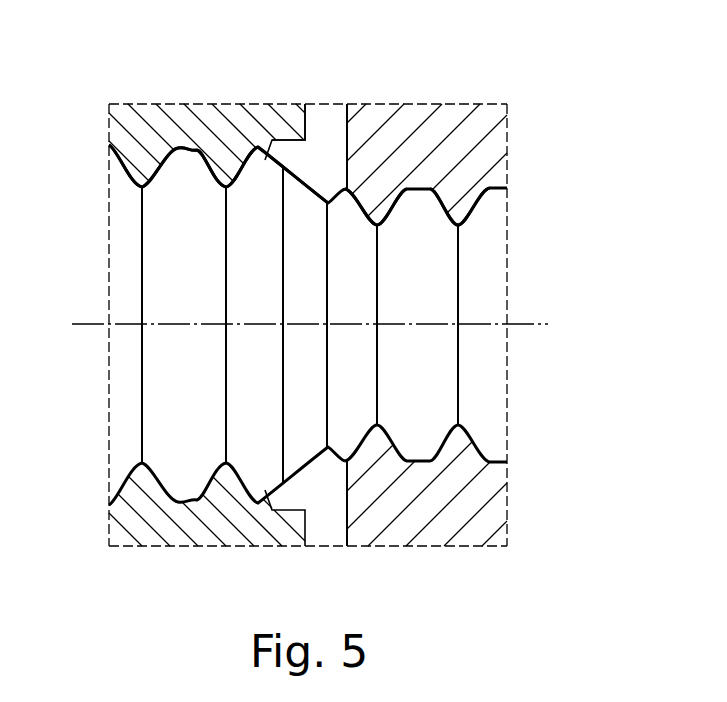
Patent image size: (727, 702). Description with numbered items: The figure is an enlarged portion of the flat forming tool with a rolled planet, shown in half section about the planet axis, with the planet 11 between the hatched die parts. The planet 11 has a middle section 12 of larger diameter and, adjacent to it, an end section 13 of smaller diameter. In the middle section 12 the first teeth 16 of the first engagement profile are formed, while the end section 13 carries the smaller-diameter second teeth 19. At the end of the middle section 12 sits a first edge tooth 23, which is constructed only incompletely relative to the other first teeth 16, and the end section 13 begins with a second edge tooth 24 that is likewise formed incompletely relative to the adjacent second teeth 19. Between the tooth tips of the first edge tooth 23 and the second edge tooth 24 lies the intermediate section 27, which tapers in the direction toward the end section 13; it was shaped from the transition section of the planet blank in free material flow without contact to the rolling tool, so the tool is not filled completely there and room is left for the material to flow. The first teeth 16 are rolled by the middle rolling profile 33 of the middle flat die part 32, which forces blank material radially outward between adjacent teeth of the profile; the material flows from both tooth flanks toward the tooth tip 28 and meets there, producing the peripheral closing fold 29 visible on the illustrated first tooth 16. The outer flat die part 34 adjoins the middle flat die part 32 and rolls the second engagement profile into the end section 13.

The planet 11 is at (225, 319).
The middle section 12 is at (225, 319).
The end section 13 is at (451, 335).
The first tooth 16 is at (197, 158).
The second tooth 19 is at (440, 220).
The first edge tooth 23 is at (305, 104).
The second edge tooth 24 is at (348, 210).
The intermediate section 27 is at (294, 182).
The tooth tip 28 is at (182, 100).
The closing fold 29 is at (177, 148).
The middle flat die part 32 is at (171, 531).
The middle rolling profile 33 is at (110, 144).
The outer flat die part 34 is at (428, 531).